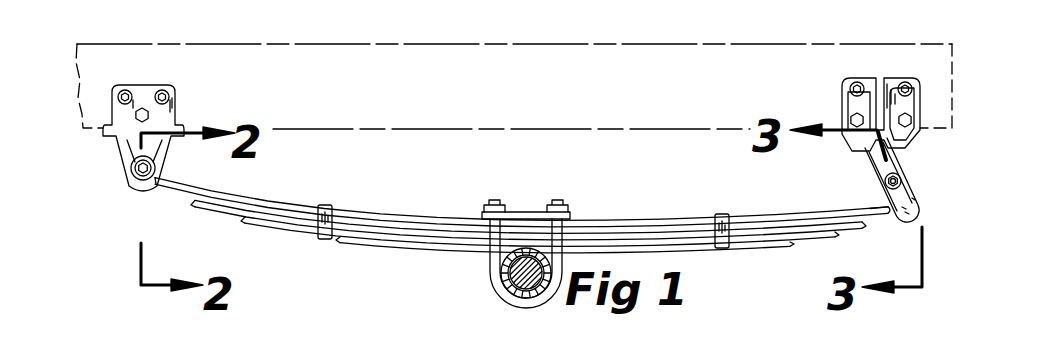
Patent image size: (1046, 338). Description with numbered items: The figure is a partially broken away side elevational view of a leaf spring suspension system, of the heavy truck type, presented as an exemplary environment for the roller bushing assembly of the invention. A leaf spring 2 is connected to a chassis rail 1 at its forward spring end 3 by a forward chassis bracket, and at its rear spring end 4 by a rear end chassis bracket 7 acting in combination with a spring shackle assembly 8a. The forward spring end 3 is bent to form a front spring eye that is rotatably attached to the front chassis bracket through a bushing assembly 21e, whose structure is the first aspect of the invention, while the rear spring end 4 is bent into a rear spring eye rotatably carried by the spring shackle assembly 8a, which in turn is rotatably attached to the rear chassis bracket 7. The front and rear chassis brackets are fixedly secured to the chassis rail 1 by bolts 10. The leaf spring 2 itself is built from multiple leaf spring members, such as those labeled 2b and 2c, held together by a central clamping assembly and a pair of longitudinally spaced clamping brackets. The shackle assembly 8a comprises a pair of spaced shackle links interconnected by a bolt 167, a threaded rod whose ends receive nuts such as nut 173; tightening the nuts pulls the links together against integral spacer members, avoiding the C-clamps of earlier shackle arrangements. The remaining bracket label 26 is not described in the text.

The chassis rail 1 is at (386, 38).
The leaf spring 2 is at (522, 237).
The leaf spring member 2b is at (291, 208).
The leaf spring member 2c is at (288, 226).
The forward spring end 3 is at (160, 186).
The rear spring end 4 is at (882, 214).
The rear end chassis bracket 7 is at (826, 95).
The spring shackle assembly 8a is at (855, 166).
The bolts 10 is at (142, 108).
The bushing assembly 21e is at (135, 180).
The front hanger bracket 26 is at (191, 90).
The bolt 167 is at (899, 177).
The nut 173 is at (885, 182).